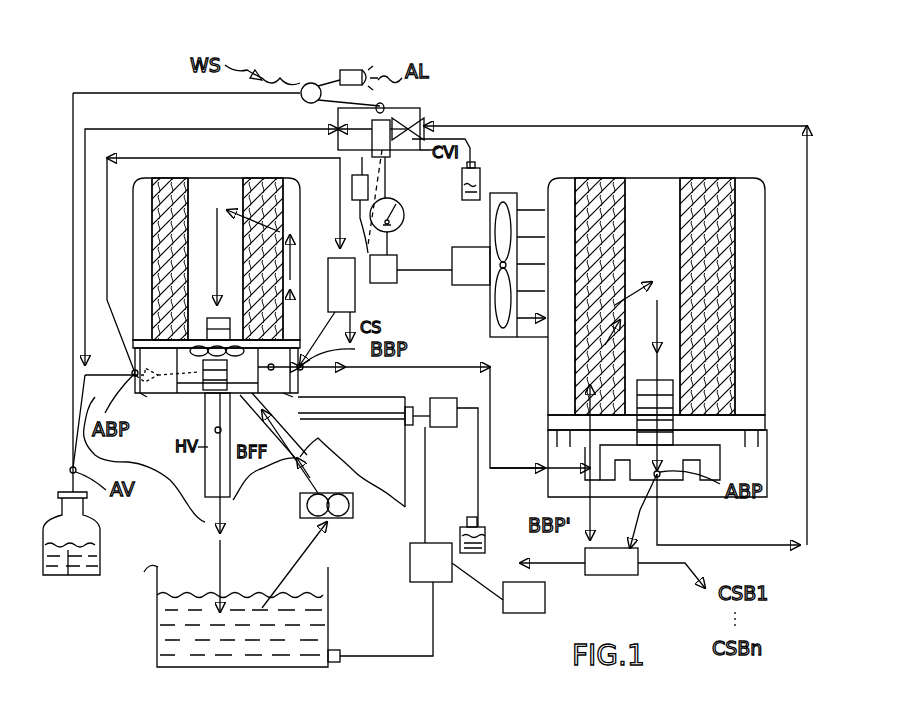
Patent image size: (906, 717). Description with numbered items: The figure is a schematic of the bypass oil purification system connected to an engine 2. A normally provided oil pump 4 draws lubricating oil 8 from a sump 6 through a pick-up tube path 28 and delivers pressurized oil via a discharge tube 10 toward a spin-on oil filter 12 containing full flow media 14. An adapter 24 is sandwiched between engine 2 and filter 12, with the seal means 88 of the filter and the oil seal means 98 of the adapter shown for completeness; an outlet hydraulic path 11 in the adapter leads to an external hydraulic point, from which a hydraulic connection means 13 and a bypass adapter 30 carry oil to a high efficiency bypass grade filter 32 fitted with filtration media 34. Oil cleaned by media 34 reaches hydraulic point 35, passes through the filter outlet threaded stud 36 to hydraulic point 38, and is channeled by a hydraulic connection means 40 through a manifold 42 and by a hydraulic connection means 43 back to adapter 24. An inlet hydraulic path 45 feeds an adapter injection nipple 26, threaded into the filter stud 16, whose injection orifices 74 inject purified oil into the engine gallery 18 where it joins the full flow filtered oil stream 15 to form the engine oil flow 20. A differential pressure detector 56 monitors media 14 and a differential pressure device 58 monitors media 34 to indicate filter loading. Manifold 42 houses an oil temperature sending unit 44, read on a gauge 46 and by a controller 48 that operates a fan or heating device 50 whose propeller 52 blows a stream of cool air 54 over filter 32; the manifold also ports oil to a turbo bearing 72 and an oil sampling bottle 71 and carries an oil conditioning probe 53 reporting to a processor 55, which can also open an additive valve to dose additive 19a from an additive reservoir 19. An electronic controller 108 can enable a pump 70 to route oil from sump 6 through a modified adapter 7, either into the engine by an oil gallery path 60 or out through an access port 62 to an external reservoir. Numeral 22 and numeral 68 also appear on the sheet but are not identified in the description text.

The engine 2 is at (350, 393).
The oil pump 4 is at (353, 512).
The sump 6 is at (330, 610).
The modified adapter 7 is at (340, 662).
The lubricating oil 8 is at (235, 590).
The discharge tube 10 is at (283, 475).
The outlet hydraulic path 11 is at (279, 378).
The spin-on oil filter 12 is at (300, 190).
The hydraulic connection means 13 is at (492, 410).
The full flow media 14 is at (220, 196).
The full flow filtered oil stream 15 is at (215, 265).
The filter stud 16 is at (190, 420).
The engine gallery 18 is at (188, 460).
The additive reservoir 19 is at (100, 548).
The additive 19a is at (70, 575).
The engine oil flow 20 is at (210, 515).
The liquid level 22 is at (222, 577).
The adapter 24 is at (308, 380).
The adapter injection nipple 26 is at (232, 310).
The pick-up tube path 28 is at (320, 545).
The bypass adapter 30 is at (300, 422).
The bypass grade filter 32 is at (765, 168).
The high efficiency filtration media 34 is at (680, 213).
The hydraulic point 35 is at (664, 270).
The filter outlet threaded stud 36 is at (672, 362).
The hydraulic point 38 is at (665, 480).
The hydraulic connection means 40 is at (807, 380).
The manifold 42 is at (420, 110).
The hydraulic connection means 43 is at (216, 127).
The oil temperature sensor or sending unit 44 is at (392, 158).
The inlet hydraulic path 45 is at (167, 366).
The gauge 46 is at (404, 215).
The controller 48 is at (385, 283).
The fan or heating device 50 is at (460, 285).
The propeller 52 is at (520, 200).
The oil conditioning probe 53 is at (384, 105).
The stream of cool air 54 is at (528, 337).
The processor 55 is at (300, 100).
The differential pressure detector 56 is at (309, 264).
The differential pressure device 58 is at (612, 575).
The oil gallery path 60 is at (375, 425).
The access port 62 is at (452, 430).
The sensor line 68 is at (445, 497).
The pump 70 is at (452, 585).
The oil sampling bottle 71 is at (478, 158).
The turbo bearing 72 is at (421, 671).
The injection orifices 74 is at (222, 403).
The seal means 88 is at (330, 258).
The oil seal means 98 is at (304, 408).
The electronic controller 108 is at (520, 613).